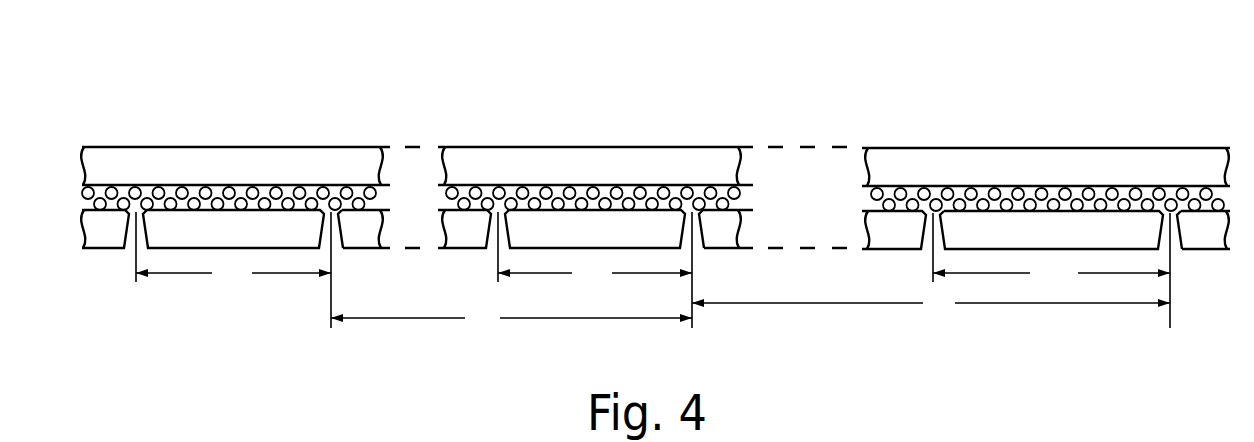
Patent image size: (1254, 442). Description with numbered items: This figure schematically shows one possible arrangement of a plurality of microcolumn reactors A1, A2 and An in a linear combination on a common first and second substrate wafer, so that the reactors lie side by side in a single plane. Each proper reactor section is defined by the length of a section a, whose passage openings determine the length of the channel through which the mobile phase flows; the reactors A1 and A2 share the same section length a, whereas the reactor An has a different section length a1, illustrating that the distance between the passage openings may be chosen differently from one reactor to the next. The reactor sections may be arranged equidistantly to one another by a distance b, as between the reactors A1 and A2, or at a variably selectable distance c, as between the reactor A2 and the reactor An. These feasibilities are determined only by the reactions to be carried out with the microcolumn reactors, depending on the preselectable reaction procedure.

The microcolumn reactor A1 is at (250, 160).
The microcolumn reactor A2 is at (567, 165).
The microcolumn reactor An is at (977, 173).
The section between passage openings a is at (414, 271).
The section between passage openings a1 is at (1051, 271).
The equidistant spaces between associated passage openings b is at (511, 318).
The different distances between associated passage openings c is at (931, 302).